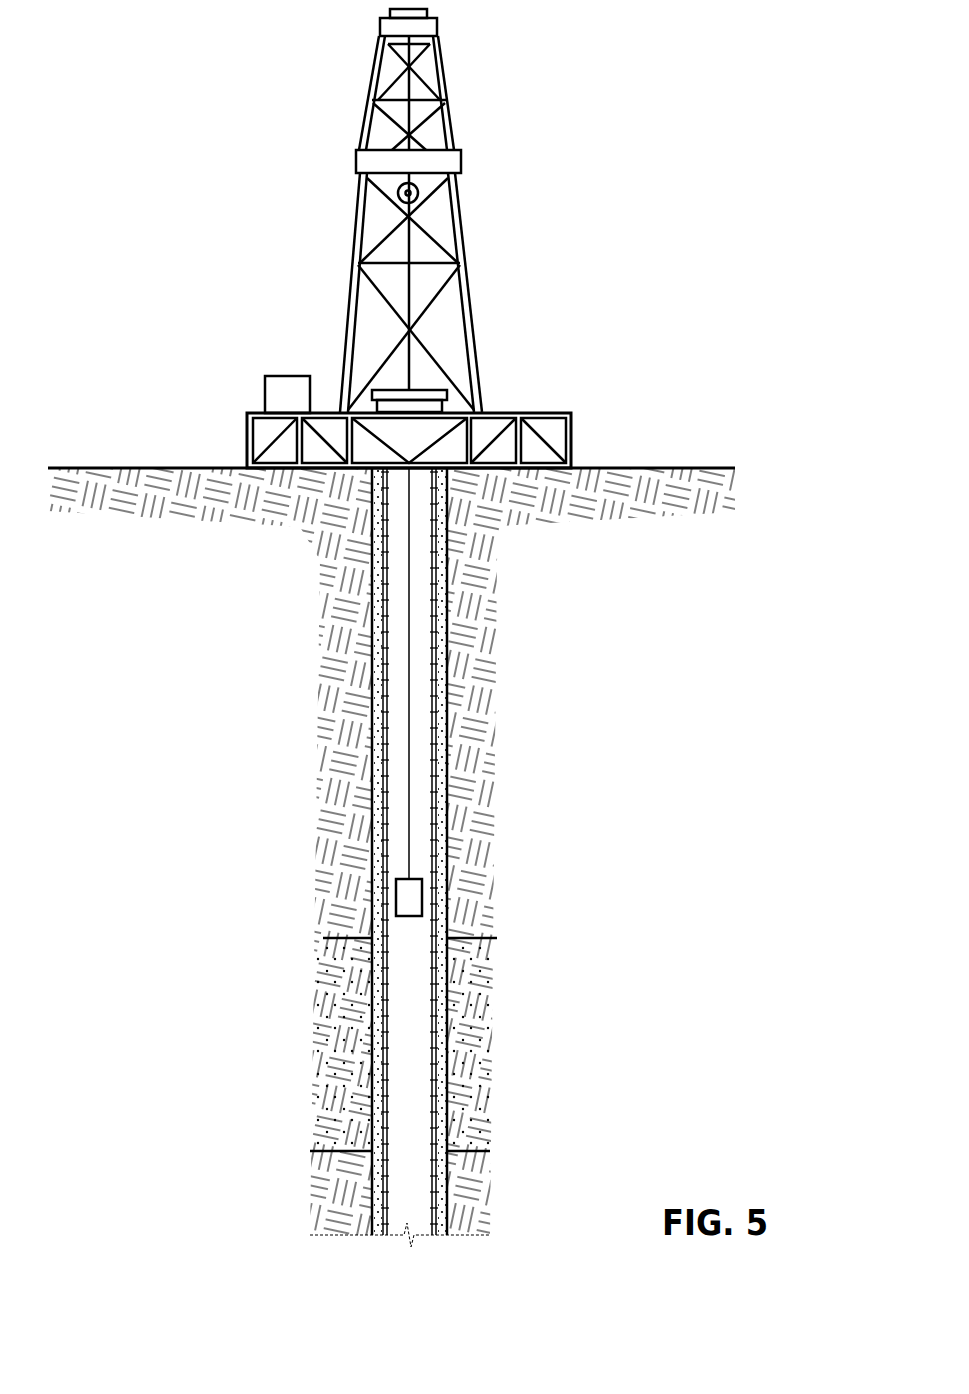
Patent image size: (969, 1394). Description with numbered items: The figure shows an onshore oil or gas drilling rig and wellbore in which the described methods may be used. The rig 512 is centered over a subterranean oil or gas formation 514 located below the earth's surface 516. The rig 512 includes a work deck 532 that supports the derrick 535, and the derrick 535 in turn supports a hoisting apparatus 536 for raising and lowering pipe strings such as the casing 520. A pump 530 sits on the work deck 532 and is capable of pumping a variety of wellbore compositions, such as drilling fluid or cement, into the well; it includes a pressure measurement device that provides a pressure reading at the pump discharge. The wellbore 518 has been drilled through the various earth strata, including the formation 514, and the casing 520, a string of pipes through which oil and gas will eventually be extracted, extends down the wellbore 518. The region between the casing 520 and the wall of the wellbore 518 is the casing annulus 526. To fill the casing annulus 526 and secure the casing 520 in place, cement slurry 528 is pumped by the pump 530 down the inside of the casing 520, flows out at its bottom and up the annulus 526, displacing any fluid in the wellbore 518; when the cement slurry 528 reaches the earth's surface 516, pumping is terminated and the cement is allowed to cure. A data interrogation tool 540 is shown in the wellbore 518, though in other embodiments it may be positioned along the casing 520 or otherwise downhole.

The rig 512 is at (379, 403).
The subterranean oil or gas formation 514 is at (488, 1048).
The earth's surface 516 is at (637, 468).
The wellbore 518 is at (462, 623).
The casing 520 is at (443, 785).
The casing annulus 526 is at (458, 906).
The cement slurry 528 is at (372, 853).
The pump 530 is at (265, 390).
The work deck 532 is at (247, 437).
The derrick 535 is at (443, 80).
The hoisting apparatus 536 is at (416, 197).
The data interrogation tool 540 is at (422, 890).